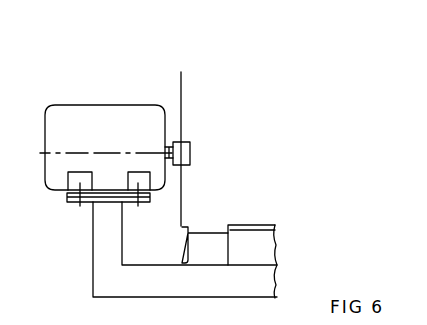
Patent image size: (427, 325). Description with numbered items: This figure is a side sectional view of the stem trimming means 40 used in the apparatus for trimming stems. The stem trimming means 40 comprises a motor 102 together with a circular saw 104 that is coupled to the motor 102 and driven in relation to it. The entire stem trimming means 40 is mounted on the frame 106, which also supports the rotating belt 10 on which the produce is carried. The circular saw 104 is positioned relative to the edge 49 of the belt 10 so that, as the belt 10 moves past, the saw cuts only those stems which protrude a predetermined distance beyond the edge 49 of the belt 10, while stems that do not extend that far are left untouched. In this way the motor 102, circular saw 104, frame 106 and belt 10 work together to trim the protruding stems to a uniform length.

The rotating belt 10 is at (265, 222).
The stem trimming means 40 is at (155, 82).
The edge of belt 49 is at (231, 226).
The motor 102 is at (58, 123).
The circular saw 104 is at (182, 128).
The frame 106 is at (105, 262).